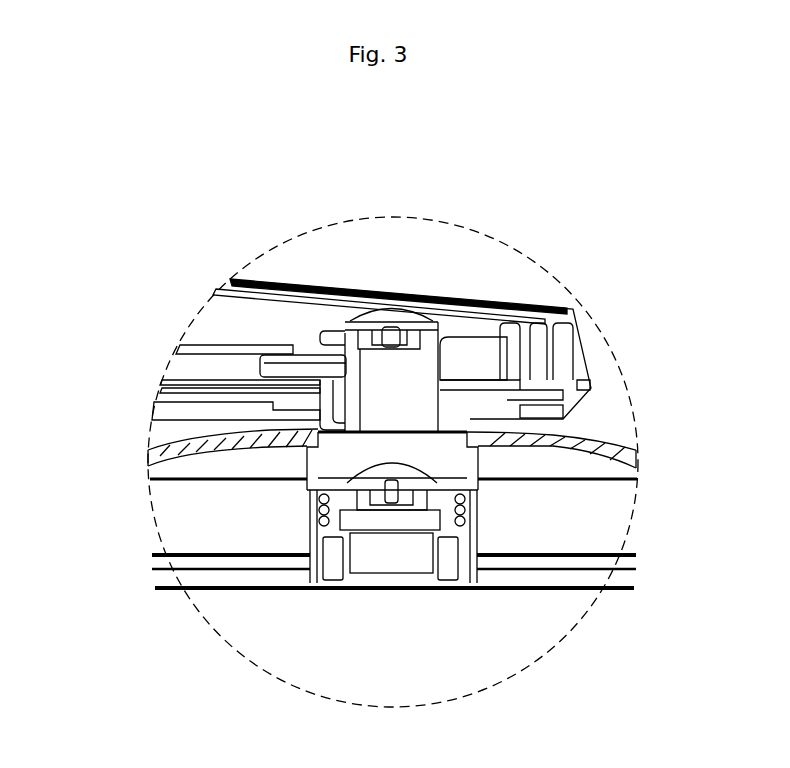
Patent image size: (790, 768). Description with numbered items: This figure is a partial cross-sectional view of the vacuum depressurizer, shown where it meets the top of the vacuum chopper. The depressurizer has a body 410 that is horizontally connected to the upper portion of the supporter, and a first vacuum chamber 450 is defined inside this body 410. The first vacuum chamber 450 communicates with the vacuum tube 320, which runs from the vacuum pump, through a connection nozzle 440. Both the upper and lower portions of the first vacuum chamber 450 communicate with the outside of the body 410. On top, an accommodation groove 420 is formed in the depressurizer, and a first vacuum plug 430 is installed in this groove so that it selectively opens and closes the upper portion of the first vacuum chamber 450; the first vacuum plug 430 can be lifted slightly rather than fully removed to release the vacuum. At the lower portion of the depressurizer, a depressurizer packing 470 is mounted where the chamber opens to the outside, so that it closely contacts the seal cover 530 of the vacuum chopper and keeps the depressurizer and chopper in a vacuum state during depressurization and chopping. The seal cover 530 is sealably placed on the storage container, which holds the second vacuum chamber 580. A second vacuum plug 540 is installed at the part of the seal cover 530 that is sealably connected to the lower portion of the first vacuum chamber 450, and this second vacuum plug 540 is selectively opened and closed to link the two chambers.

The vacuum tube 320 is at (212, 345).
The body 410 is at (276, 278).
The accommodation groove 420 is at (358, 296).
The first vacuum plug 430 is at (405, 317).
The connection nozzle 440 is at (308, 352).
The first vacuum chamber 450 is at (508, 302).
The depressurizer packing 470 is at (563, 420).
The seal cover 530 is at (178, 452).
The second vacuum plug 540 is at (382, 470).
The second vacuum chamber 580 is at (415, 656).